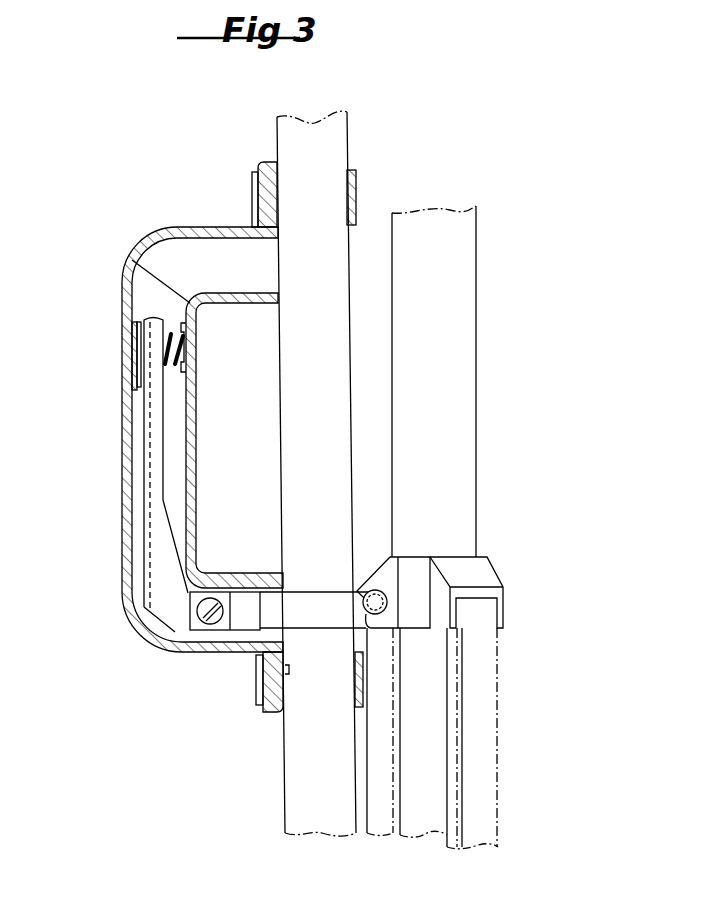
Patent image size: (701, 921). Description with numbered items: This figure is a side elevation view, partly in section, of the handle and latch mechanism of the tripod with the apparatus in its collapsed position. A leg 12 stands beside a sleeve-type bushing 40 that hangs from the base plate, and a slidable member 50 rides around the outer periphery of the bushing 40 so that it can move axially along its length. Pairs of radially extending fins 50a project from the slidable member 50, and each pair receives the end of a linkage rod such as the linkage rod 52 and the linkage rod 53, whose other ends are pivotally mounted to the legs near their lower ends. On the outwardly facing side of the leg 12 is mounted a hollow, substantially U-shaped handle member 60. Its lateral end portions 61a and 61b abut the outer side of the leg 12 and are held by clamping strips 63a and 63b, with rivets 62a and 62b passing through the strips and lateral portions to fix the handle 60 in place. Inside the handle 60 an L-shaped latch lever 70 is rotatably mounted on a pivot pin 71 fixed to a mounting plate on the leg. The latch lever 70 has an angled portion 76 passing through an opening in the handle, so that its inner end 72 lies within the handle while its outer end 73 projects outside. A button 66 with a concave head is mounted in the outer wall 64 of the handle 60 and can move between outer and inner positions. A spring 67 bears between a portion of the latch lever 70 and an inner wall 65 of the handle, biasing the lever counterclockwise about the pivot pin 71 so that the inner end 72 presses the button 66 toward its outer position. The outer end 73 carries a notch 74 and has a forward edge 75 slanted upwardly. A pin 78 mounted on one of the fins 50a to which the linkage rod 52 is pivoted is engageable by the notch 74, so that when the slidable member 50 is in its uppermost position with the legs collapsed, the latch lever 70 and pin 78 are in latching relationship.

The leg 12 is at (290, 135).
The sleeve-type bushing 40 is at (470, 280).
The slidable member 50 is at (464, 593).
The fins 50a is at (390, 563).
The linkage rod 52 is at (382, 797).
The linkage rod 53 is at (494, 744).
The handle member 60 is at (215, 457).
The lateral end portion 61a is at (258, 167).
The lateral end portion 61b is at (265, 712).
The rivet 62a is at (280, 200).
The rivet 62b is at (289, 674).
The clamping strip 63a is at (252, 197).
The clamping strip 63b is at (257, 688).
The outer wall 64 is at (122, 497).
The inner wall 65 is at (133, 261).
The button 66 is at (132, 336).
The spring 67 is at (171, 333).
The latch lever 70 is at (170, 592).
The pivot pin 71 is at (198, 614).
The inner end 72 is at (150, 353).
The outer end 73 is at (305, 598).
The notch 74 is at (370, 614).
The forward edge 75 is at (397, 607).
The angled portion 76 is at (238, 624).
The pin 78 is at (385, 590).